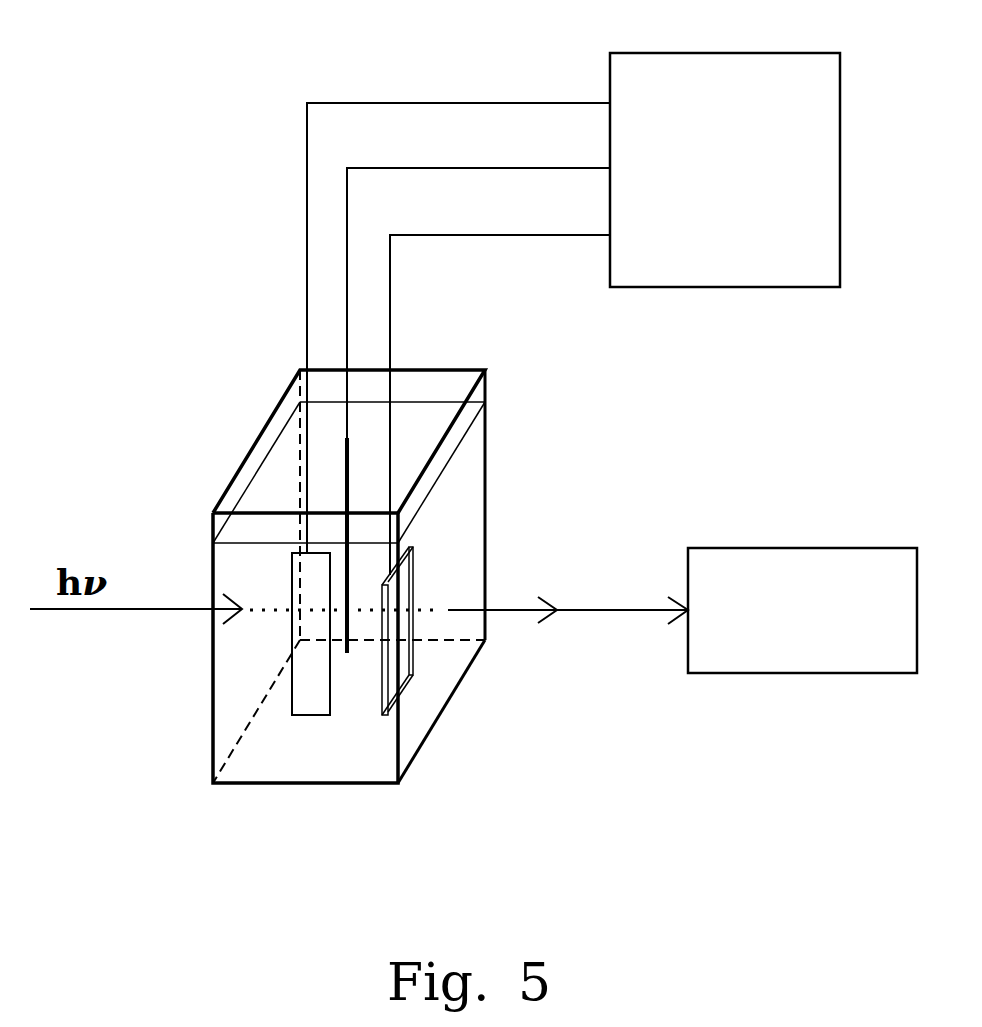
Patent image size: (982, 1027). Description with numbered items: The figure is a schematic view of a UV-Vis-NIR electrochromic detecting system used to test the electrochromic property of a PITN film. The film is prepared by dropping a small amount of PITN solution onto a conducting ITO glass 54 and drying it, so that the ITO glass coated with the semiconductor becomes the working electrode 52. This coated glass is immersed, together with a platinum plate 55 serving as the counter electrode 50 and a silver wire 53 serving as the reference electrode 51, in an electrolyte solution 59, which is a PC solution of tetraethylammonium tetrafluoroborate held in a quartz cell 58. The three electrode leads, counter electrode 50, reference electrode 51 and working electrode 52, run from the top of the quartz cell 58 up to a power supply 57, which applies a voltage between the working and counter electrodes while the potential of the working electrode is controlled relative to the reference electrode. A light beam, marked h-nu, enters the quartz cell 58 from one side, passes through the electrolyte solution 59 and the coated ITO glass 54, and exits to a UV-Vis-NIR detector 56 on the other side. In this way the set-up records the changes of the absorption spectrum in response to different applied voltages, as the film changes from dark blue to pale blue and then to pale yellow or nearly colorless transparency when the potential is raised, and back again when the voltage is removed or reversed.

The counter electrode 50 is at (458, 309).
The reference electrode 51 is at (478, 284).
The working electrode 52 is at (500, 386).
The silver wire 53 is at (349, 471).
The conducting ITO glass 54 is at (413, 675).
The platinum plate 55 is at (312, 648).
The UV-Vis-NIR detector 56 is at (802, 610).
The power supply 57 is at (725, 170).
The quartz cell 58 is at (273, 785).
The electrolyte solution 59 is at (243, 636).